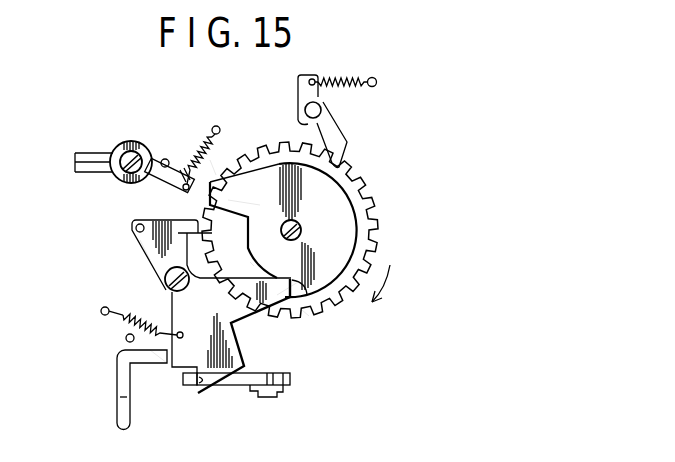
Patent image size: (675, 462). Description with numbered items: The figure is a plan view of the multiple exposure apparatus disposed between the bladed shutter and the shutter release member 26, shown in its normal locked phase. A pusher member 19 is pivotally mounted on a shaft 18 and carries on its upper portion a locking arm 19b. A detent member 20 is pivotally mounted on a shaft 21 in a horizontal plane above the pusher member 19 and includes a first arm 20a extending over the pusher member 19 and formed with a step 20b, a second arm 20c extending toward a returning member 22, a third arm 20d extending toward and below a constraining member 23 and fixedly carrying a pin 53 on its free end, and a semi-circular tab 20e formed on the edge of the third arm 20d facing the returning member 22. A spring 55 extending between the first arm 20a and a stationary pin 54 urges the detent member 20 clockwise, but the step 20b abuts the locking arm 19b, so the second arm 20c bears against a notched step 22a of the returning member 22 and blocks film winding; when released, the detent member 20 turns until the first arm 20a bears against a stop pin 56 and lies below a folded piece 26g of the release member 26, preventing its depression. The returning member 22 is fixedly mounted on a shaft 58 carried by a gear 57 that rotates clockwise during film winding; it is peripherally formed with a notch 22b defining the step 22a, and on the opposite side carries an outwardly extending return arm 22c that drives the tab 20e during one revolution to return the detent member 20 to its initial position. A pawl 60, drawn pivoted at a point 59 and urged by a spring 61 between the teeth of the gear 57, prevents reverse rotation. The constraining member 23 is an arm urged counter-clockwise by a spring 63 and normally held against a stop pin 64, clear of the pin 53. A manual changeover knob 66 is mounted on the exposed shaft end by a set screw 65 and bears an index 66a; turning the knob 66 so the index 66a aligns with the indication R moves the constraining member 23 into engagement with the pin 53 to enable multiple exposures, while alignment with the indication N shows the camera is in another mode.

The shaft 18 is at (262, 397).
The pusher member 19 is at (243, 385).
The locking arm 19b is at (191, 385).
The detent member 20 is at (153, 260).
The first arm 20a is at (233, 358).
The step 20b is at (226, 385).
The second arm 20c is at (284, 312).
The third arm 20d is at (140, 245).
The semi-circular tab 20e is at (246, 197).
The shaft 21 is at (165, 285).
The returning member 22 is at (352, 229).
The notched step 22a is at (307, 315).
The notch 22b is at (252, 255).
The return arm 22c is at (215, 176).
The constraining member 23 is at (178, 191).
The shutter release member 26 is at (121, 378).
The folded piece 26g is at (160, 362).
The pin 53 is at (136, 230).
The stationary pin 54 is at (101, 310).
The spring 55 is at (126, 324).
The stop pin 56 is at (127, 341).
The gear 57 is at (347, 165).
The shaft 58 is at (300, 231).
The pivot 59 is at (322, 109).
The pawl 60 is at (333, 136).
The spring 61 is at (332, 81).
The spring 63 is at (202, 148).
The stop pin 64 is at (167, 159).
The set screw 65 is at (124, 152).
The manual changeover knob 66 is at (132, 142).
The index 66a is at (100, 172).
The indication R is at (76, 120).
The indication N is at (71, 162).